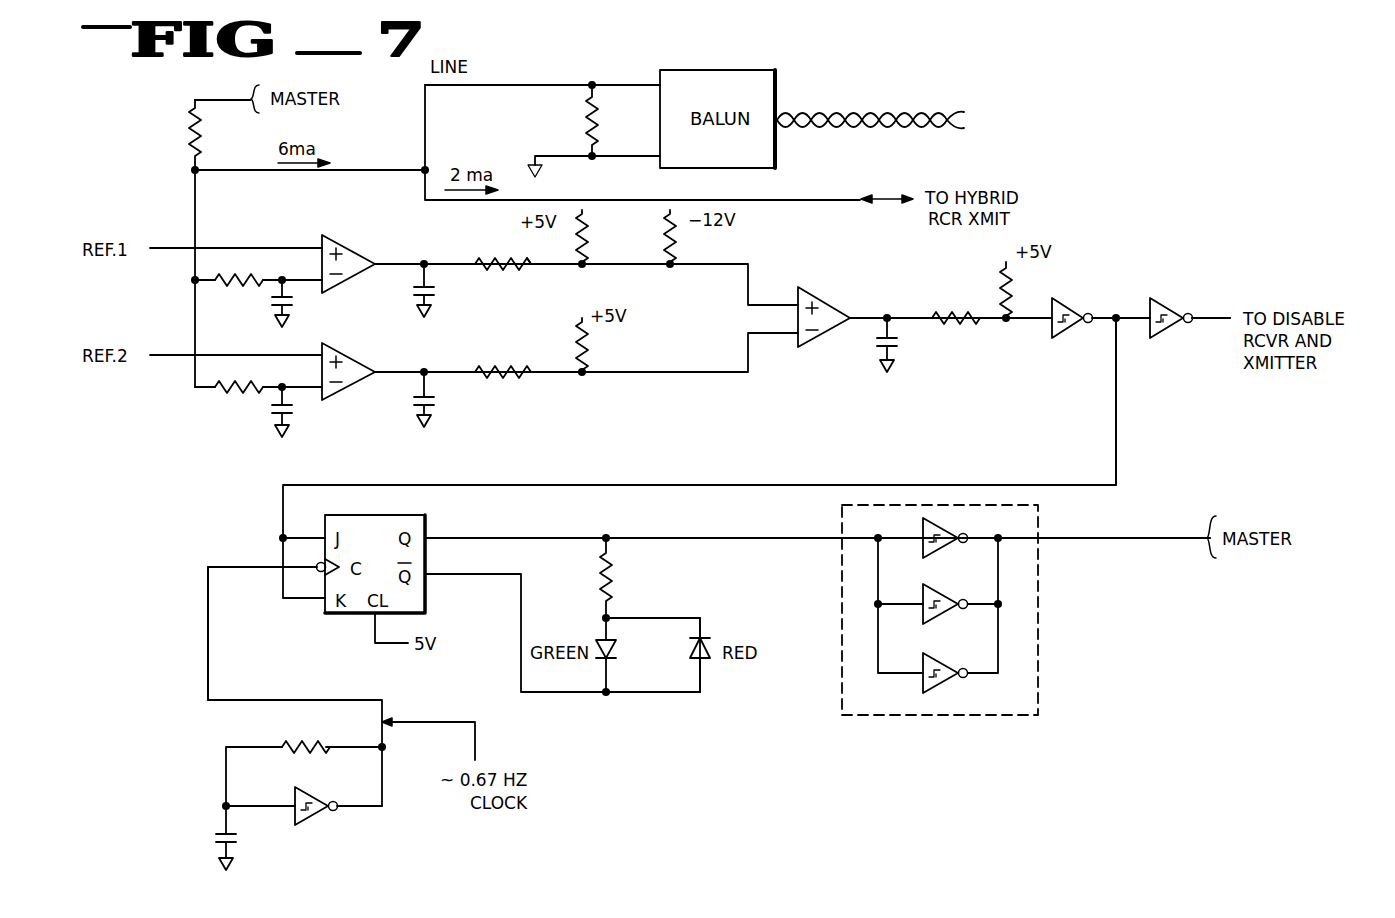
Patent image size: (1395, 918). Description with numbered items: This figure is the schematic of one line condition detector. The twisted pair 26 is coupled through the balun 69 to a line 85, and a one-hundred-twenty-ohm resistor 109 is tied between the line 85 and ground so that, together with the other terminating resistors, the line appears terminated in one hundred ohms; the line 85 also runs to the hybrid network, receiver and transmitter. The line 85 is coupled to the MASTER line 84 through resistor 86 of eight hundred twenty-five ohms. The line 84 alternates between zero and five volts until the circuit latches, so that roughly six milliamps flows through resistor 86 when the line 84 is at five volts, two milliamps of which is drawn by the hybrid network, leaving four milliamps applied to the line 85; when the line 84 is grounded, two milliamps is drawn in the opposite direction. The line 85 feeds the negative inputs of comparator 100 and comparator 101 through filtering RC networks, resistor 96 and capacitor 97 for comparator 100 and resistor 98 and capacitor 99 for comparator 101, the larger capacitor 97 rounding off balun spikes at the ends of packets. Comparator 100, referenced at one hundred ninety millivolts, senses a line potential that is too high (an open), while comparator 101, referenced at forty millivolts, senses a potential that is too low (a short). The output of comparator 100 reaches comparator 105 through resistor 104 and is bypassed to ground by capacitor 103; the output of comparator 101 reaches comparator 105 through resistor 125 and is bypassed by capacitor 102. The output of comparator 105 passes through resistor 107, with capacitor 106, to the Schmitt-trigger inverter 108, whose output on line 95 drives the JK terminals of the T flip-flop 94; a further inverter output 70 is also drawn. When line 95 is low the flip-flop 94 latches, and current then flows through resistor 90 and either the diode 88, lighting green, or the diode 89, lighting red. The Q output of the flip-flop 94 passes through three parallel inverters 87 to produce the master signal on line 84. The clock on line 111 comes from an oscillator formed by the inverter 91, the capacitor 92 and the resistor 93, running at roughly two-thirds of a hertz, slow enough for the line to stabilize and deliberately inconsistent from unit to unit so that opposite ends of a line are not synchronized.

The line 84 is at (240, 80).
The resistor 86 is at (186, 132).
The line 85 is at (541, 84).
The resistor 109 is at (585, 120).
The balun 69 is at (760, 70).
The twisted pair 26 is at (872, 112).
The comparator 100 is at (358, 251).
The comparator 101 is at (364, 359).
The resistor 96 is at (241, 289).
The capacitor 97 is at (299, 301).
The resistor 98 is at (236, 394).
The capacitor 99 is at (299, 410).
The capacitor 103 is at (431, 298).
The resistor 104 is at (503, 277).
The capacitor 102 is at (439, 400).
The resistor 125 is at (504, 384).
The comparator 105 is at (832, 302).
The capacitor 106 is at (904, 347).
The resistor 107 is at (947, 312).
The inverter 108 is at (1068, 310).
The disable output inverter 70 is at (1210, 316).
The line 95 is at (1118, 398).
The T flip-flop 94 is at (428, 525).
The clock signal line 111 is at (208, 630).
The resistor 90 is at (620, 580).
The diode 88 is at (620, 655).
The diode 89 is at (712, 636).
The inverters 87 is at (1040, 658).
The resistor 93 is at (300, 747).
The capacitor 92 is at (215, 830).
The inverter 91 is at (305, 823).